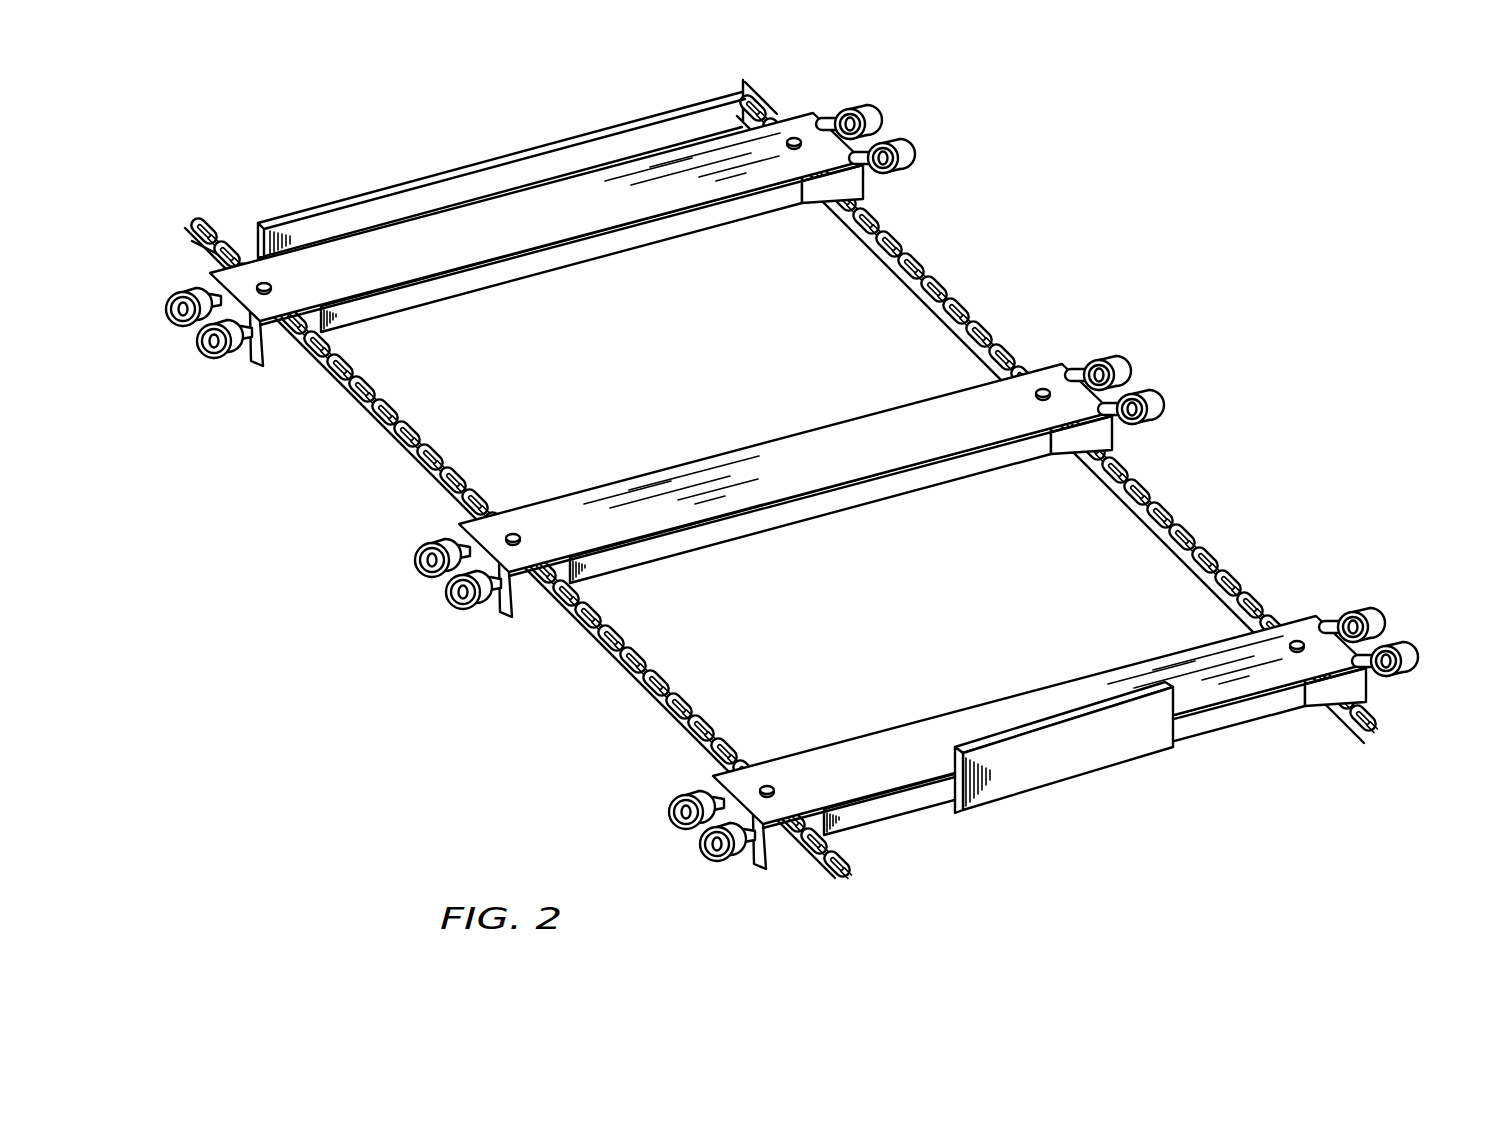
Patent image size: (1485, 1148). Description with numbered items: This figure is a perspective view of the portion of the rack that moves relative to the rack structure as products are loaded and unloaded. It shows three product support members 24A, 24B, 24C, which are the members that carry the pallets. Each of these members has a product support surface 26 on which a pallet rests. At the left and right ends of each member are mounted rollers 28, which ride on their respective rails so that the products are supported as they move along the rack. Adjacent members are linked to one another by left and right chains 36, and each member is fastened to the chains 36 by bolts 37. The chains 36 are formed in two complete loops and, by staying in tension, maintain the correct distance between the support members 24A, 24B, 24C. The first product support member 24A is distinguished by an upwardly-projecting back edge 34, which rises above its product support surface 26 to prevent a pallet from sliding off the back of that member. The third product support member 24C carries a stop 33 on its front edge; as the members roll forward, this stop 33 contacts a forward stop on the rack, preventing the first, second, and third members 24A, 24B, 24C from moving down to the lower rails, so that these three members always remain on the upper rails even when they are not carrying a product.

The first product support member 24A is at (657, 183).
The second product support member 24B is at (863, 427).
The third product support member 24C is at (988, 717).
The product support surface 26 is at (520, 232).
The rollers 28 is at (886, 146).
The stop 33 is at (1052, 760).
The upwardly-projecting back edge 34 is at (466, 182).
The chains 36 is at (912, 262).
The bolts 37 is at (267, 285).